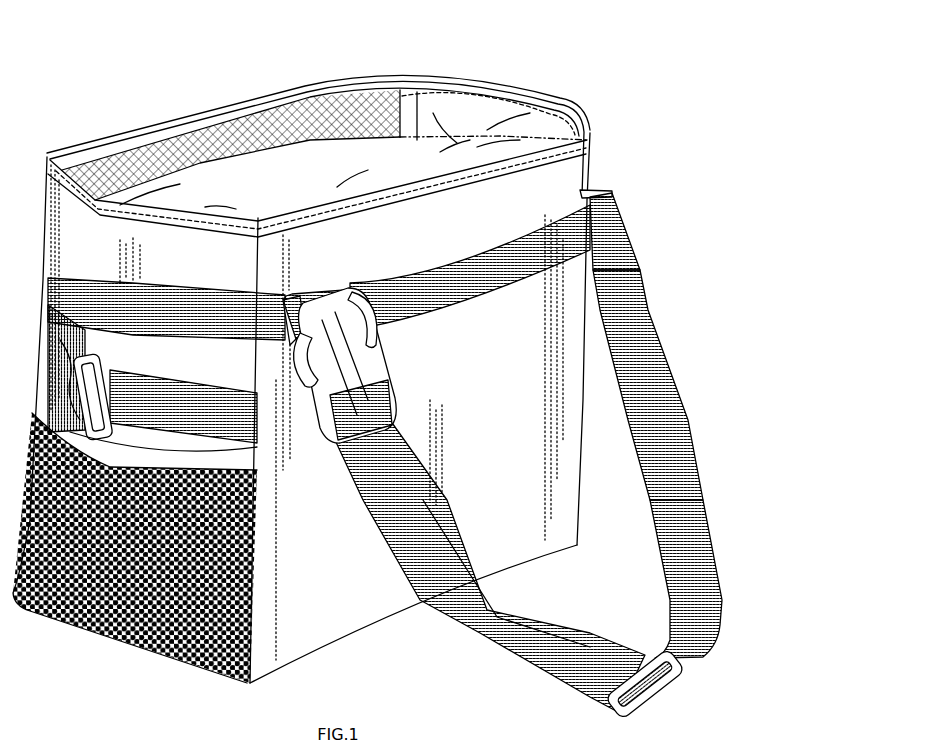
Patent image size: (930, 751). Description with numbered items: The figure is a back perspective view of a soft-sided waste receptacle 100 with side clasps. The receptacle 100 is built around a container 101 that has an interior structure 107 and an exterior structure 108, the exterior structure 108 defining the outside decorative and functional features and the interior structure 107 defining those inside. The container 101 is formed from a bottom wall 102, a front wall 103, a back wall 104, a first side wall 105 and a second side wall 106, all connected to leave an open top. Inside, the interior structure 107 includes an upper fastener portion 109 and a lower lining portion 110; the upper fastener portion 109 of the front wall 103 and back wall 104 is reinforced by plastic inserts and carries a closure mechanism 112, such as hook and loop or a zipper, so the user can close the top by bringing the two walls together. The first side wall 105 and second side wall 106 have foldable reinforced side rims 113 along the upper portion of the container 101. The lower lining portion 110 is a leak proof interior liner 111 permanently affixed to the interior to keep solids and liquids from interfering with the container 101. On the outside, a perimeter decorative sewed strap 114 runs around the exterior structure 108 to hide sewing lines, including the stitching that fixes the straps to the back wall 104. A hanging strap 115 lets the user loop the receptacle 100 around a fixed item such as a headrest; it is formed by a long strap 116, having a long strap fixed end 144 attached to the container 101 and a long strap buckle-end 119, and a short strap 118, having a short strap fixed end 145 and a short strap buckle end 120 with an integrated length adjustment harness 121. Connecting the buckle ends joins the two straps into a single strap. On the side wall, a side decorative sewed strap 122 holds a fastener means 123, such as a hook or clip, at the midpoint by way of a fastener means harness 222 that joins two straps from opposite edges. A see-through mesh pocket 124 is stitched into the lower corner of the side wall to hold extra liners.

The receptacle 100 is at (735, 146).
The container 101 is at (593, 150).
The bottom wall 102 is at (573, 550).
The front wall 103 is at (250, 187).
The back wall 104 is at (423, 222).
The first side wall 105 is at (453, 163).
The second side wall 106 is at (223, 268).
The interior structure 107 is at (337, 187).
The exterior structure 108 is at (513, 383).
The upper fastener portion 109 is at (250, 157).
The lower lining portion 110 is at (210, 203).
The leak proof interior liner 111 is at (263, 217).
The closure mechanism 112 is at (323, 113).
The foldable reinforced side rim 113 is at (470, 113).
The perimeter decorative sewed strap 114 is at (513, 283).
The hanging strap 115 is at (690, 443).
The long strap 116 is at (657, 340).
The short strap 118 is at (327, 273).
The long strap buckle-end 119 is at (370, 343).
The short strap buckle end 120 is at (313, 397).
The integrated length adjustment harness 121 is at (393, 410).
The side decorative sewed strap 122 is at (187, 393).
The fastener means 123 is at (140, 458).
The see-through mesh pocket 124 is at (167, 653).
The long strap fixed end 144 is at (613, 240).
The short strap fixed end 145 is at (290, 292).
The fastener means harness 222 is at (118, 370).